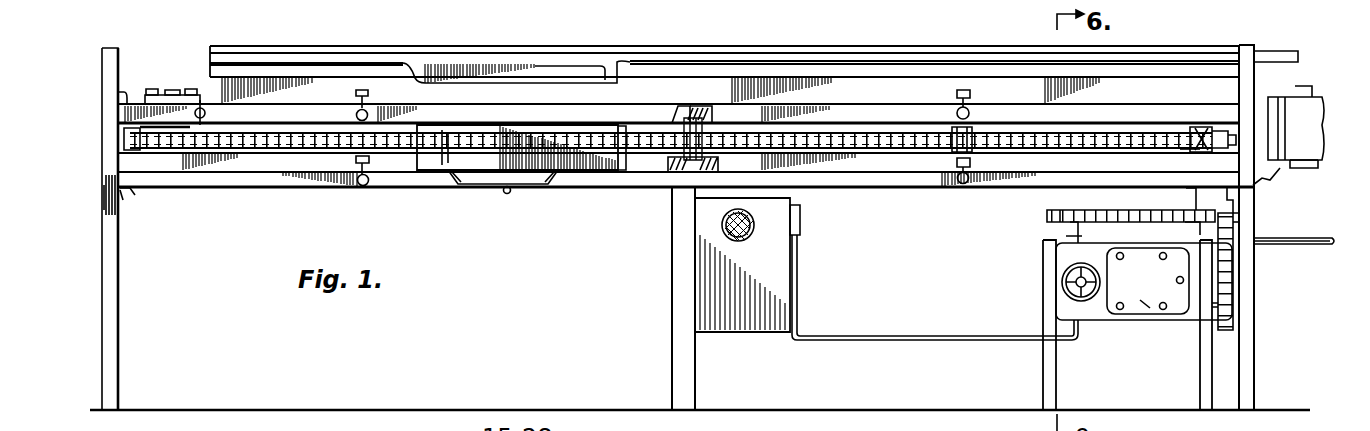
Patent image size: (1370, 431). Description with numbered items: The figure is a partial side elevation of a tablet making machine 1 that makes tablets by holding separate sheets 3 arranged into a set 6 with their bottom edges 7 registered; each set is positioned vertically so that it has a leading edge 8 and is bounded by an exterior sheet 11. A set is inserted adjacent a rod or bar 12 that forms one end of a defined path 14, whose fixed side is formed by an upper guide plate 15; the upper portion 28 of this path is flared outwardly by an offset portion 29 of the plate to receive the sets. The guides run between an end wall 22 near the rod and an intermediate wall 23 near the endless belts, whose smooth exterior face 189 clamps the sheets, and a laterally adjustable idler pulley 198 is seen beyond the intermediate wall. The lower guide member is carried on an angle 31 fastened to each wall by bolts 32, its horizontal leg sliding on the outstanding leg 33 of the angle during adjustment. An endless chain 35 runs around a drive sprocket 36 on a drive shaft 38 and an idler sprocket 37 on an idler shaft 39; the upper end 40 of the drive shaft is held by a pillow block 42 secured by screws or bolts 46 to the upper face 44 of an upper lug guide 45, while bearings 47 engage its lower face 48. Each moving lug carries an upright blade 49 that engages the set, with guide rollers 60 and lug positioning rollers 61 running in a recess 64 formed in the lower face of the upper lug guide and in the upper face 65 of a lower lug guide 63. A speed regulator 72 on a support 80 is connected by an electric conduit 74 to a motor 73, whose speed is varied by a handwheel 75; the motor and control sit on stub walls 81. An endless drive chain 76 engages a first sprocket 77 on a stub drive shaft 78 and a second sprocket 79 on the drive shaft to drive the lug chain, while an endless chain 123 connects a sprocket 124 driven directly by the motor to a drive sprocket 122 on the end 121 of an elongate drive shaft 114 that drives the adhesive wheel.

The tablet making machine 1 is at (668, 270).
The sheets 3 is at (495, 180).
The set 6 is at (560, 72).
The edges 7 is at (508, 187).
The leading edge 8 is at (635, 162).
The exterior sheet 11 is at (600, 68).
The rod or bar 12 is at (206, 113).
The defined path 14 is at (410, 63).
The upper guide plate 15 is at (915, 83).
The end wall 22 is at (118, 355).
The intermediate wall 23 is at (1254, 378).
The upper portion 28 is at (506, 62).
The offset portion 29 is at (757, 70).
The angle 31 is at (128, 200).
The bolts 32 is at (102, 185).
The outstanding leg 33 is at (135, 192).
The endless chain 35 is at (877, 135).
The drive sprocket 36 is at (1205, 135).
The idler sprocket 37 is at (124, 143).
The drive shaft 38 is at (1200, 148).
The idler shaft 39 is at (124, 128).
The upper end 40 is at (168, 96).
The pillow block 42 is at (148, 98).
The upper face 44 is at (118, 92).
The upper lug guide 45 is at (493, 118).
The screws or bolts 46 is at (200, 100).
The bearings 47 is at (203, 125).
The lower face 48 is at (336, 130).
The blade 49 is at (935, 133).
The guide rollers 60 is at (708, 156).
The lug positioning rollers 61 is at (678, 108).
The lower lug guide 63 is at (892, 165).
The recess 64 is at (712, 118).
The upper face 65 is at (912, 152).
The speed regulator 72 is at (738, 325).
The motor 73 is at (1150, 308).
The electric conduit 74 is at (905, 342).
The handwheel 75 is at (1058, 280).
The endless drive chain 76 is at (1126, 218).
The first sprocket 77 is at (1066, 212).
The stub drive shaft 78 is at (1068, 230).
The second sprocket 79 is at (1195, 215).
The support 80 is at (672, 365).
The stub walls 81 is at (1043, 382).
The elongate drive shaft 114 is at (1280, 246).
The end 121 is at (1305, 238).
The drive sprocket 122 is at (1233, 226).
The endless chain 123 is at (1215, 262).
The sprocket 124 is at (1234, 323).
The exterior face 189 is at (1318, 135).
The idler pulley 198 is at (1285, 97).